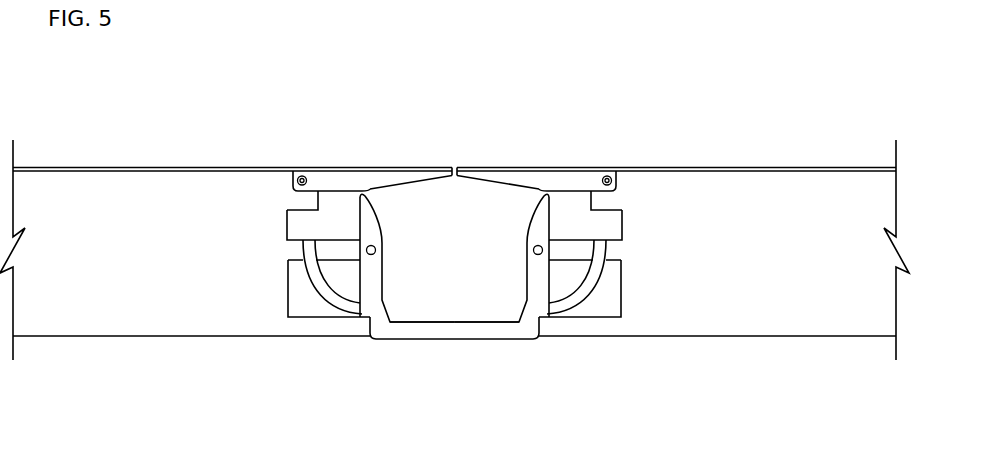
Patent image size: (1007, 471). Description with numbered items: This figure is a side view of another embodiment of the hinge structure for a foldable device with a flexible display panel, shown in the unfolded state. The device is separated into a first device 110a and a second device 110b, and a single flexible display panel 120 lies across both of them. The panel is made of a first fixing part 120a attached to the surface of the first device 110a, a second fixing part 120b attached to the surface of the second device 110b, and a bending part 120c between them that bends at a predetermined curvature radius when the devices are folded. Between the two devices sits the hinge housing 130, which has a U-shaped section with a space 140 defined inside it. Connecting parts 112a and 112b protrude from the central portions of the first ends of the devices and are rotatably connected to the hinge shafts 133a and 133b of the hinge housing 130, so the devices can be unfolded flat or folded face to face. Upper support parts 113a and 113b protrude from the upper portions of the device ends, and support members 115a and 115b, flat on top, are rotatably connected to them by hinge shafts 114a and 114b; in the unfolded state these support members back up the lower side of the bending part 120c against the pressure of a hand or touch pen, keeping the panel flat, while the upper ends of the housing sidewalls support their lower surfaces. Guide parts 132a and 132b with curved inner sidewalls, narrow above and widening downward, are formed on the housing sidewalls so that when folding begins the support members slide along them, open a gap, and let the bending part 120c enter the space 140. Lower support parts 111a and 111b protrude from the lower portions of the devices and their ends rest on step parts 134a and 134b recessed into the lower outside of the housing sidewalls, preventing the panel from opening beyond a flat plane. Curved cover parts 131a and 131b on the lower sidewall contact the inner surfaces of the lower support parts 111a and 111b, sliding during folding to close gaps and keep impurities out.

The first device 110a is at (88, 325).
The second device 110b is at (825, 325).
The lower support part 111a is at (325, 330).
The lower support part 111b is at (583, 330).
The connecting part 112a is at (337, 243).
The connecting part 112b is at (572, 243).
The upper support part 113a is at (303, 193).
The upper support part 113b is at (606, 193).
The hinge shaft 114a is at (300, 176).
The hinge shaft 114b is at (609, 176).
The support member 115a is at (372, 185).
The support member 115b is at (537, 185).
The flexible display panel 120 is at (454, 127).
The first fixing part 120a is at (95, 167).
The second fixing part 120b is at (815, 167).
The bending part 120c is at (457, 167).
The hinge housing 130 is at (437, 332).
The cover part 131a is at (313, 285).
The cover part 131b is at (596, 285).
The guide part 132a is at (381, 218).
The guide part 132b is at (528, 218).
The hinge shaft 133a is at (392, 322).
The hinge shaft 133b is at (515, 322).
The step part 134a is at (363, 338).
The step part 134b is at (548, 338).
The space 140 is at (465, 287).